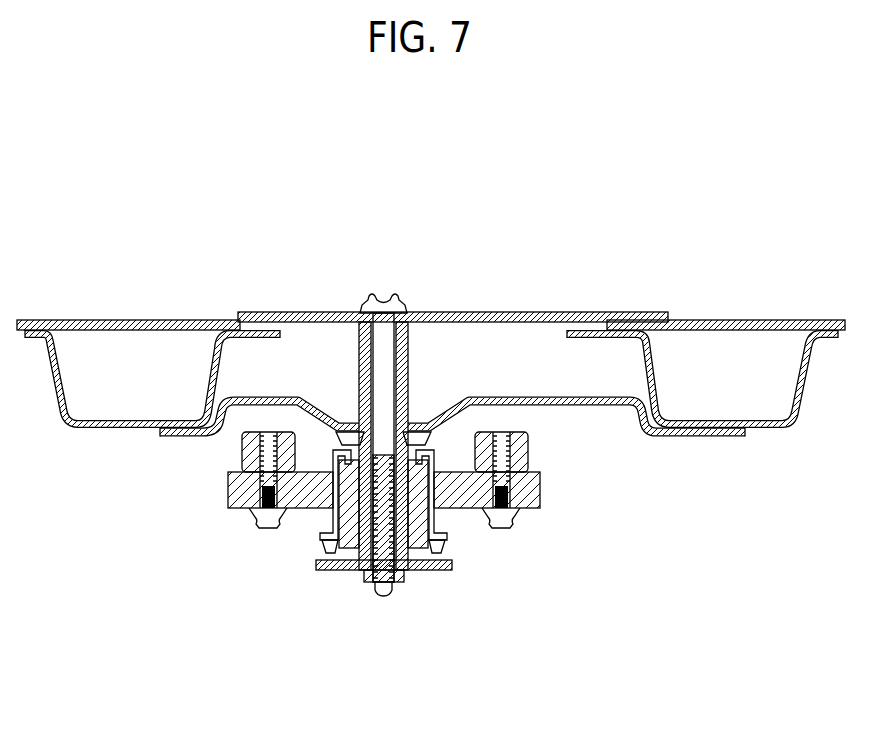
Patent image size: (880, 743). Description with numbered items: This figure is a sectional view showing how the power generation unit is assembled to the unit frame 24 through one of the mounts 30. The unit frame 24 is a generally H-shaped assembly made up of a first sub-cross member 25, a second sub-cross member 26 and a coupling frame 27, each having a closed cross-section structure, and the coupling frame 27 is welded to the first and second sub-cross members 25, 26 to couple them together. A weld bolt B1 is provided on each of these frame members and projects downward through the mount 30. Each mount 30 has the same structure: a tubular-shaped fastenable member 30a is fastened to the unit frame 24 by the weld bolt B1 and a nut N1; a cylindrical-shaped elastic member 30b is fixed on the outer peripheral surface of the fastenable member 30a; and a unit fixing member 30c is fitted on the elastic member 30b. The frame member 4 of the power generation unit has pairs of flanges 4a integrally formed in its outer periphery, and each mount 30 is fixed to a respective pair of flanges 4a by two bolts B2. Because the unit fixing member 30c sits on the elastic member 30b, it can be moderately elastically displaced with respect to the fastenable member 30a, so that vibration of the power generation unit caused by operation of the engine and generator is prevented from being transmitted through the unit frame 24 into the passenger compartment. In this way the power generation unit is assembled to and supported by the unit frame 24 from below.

The unit frame 24 is at (755, 312).
The first sub-cross member 25 is at (788, 422).
The second sub-cross member 26 is at (74, 426).
The coupling frame 27 is at (598, 405).
The mount 30 is at (361, 522).
The fastenable member 30a is at (406, 622).
The elastic member 30b is at (353, 550).
The unit fixing member 30c is at (306, 508).
The flange 4a is at (242, 458).
The frame member 4 is at (400, 496).
The weld bolt B1 is at (383, 358).
The bolt B2 is at (253, 518).
The nut N1 is at (400, 582).